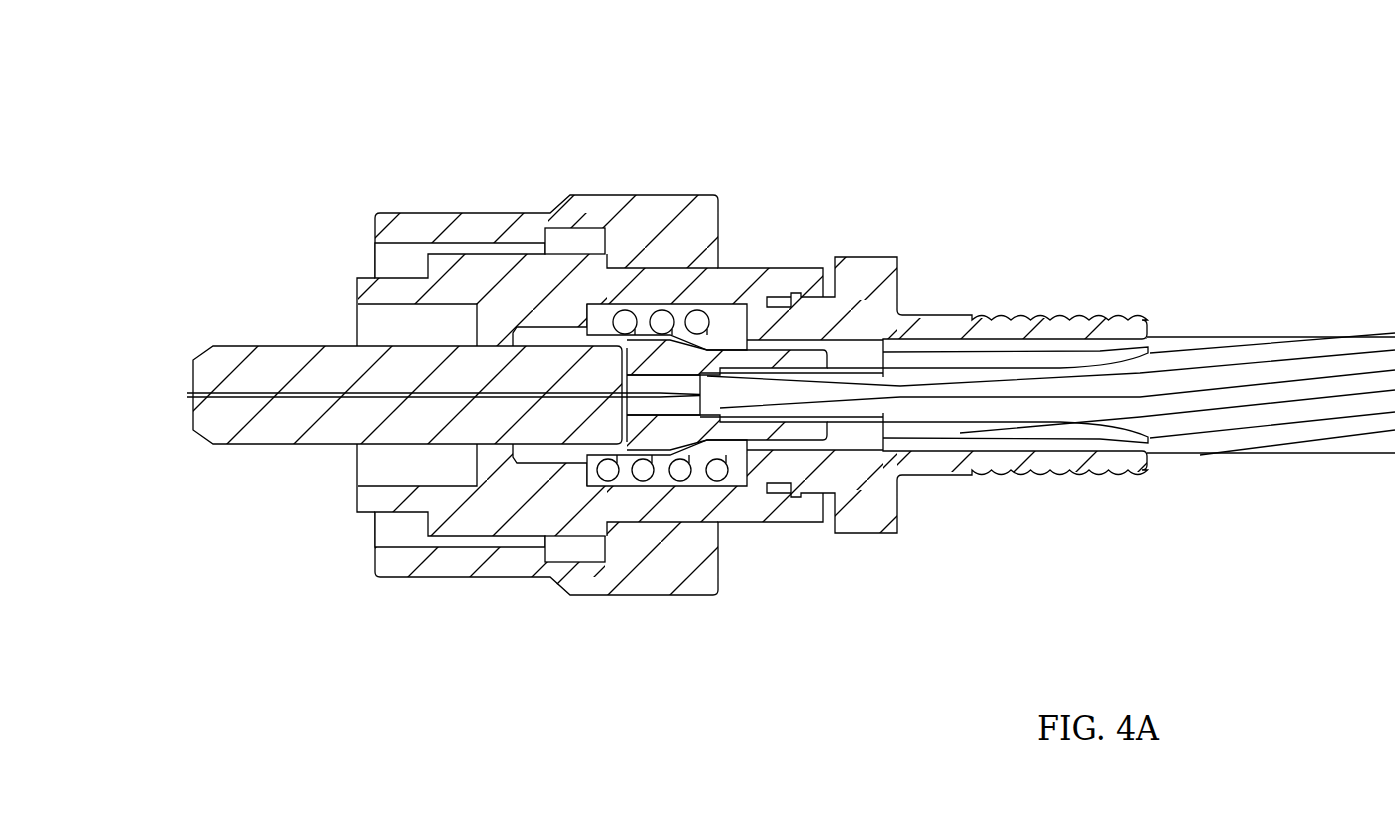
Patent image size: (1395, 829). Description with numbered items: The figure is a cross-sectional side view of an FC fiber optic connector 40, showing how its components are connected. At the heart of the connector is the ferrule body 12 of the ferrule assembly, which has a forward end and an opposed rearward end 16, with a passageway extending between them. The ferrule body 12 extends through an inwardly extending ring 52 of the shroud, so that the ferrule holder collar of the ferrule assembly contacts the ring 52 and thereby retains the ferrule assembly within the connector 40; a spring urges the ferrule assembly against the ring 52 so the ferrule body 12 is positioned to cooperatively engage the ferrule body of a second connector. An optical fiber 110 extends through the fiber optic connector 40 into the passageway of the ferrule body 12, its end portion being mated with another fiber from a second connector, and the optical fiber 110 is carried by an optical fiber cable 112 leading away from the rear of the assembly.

The fiber optic connector 40 is at (608, 112).
The ferrule body 12 is at (304, 344).
The optical fiber 110 is at (190, 394).
The inwardly extending ring 52 is at (517, 447).
The rearward end 16 is at (625, 423).
The optical fiber cable 112 is at (1190, 337).